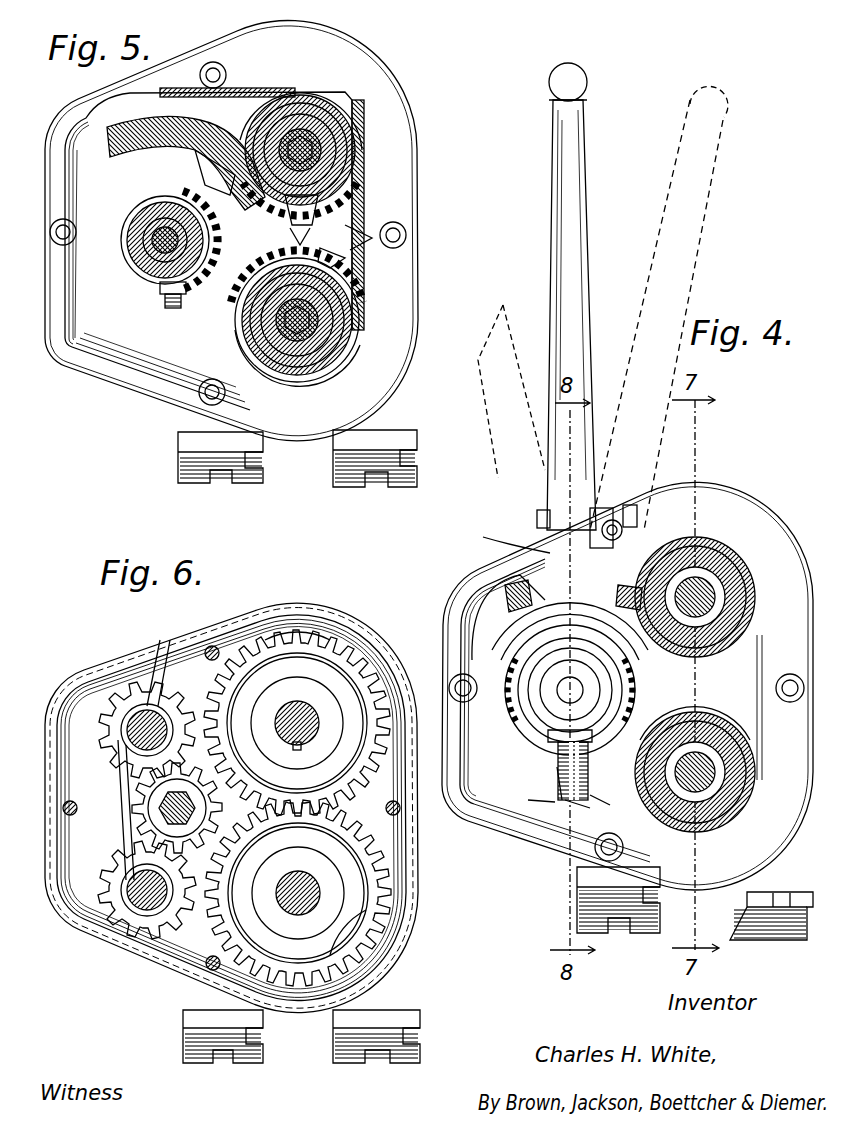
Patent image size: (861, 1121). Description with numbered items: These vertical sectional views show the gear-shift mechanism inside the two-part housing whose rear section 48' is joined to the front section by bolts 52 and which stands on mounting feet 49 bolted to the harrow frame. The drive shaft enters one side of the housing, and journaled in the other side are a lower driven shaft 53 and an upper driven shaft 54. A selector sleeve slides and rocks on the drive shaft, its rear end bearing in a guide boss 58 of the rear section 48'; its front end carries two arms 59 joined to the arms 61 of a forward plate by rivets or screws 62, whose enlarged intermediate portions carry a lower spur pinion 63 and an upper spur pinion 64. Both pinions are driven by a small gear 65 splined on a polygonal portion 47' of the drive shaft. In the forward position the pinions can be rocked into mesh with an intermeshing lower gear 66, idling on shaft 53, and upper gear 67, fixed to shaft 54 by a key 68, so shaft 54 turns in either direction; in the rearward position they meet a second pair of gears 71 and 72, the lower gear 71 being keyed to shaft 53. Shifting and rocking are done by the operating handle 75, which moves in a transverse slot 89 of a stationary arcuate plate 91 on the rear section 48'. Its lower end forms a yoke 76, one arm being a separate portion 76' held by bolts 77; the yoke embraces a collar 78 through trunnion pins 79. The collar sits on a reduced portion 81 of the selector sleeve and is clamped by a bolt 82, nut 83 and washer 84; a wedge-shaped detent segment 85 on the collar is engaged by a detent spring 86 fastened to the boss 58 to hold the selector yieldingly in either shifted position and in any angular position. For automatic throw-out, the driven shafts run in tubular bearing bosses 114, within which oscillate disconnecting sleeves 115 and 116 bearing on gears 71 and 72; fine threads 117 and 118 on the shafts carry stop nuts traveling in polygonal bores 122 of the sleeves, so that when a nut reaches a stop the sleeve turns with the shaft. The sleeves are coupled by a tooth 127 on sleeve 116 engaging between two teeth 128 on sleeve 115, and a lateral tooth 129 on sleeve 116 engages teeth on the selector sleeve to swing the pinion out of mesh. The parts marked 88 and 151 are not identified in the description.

In FIG. 5, the polygonal portion of the drive shaft 47' is at (150, 240).
In FIG. 6, the polygonal portion of the drive shaft 47' is at (161, 808).
In FIG. 5, the rear housing section 48' is at (258, 230).
In FIG. 4, the rear housing section 48' is at (627, 669).
In FIG. 5, the mounting legs or feet 49 is at (335, 470).
In FIG. 4, the mounting legs or feet 49 is at (615, 935).
In FIG. 6, the mounting legs or feet 49 is at (335, 1065).
In FIG. 5, the bolts 52 is at (215, 70).
In FIG. 4, the bolts 52 is at (600, 850).
In FIG. 6, the bolts 52 is at (210, 650).
In FIG. 5, the lower driven shaft 53 is at (305, 312).
In FIG. 4, the lower driven shaft 53 is at (717, 767).
In FIG. 6, the lower driven shaft 53 is at (312, 893).
In FIG. 5, the upper driven shaft 54 is at (330, 155).
In FIG. 4, the upper driven shaft 54 is at (743, 562).
In FIG. 6, the upper driven shaft 54 is at (302, 718).
In FIG. 4, the guide boss 58 is at (588, 752).
In FIG. 5, the arms 59 is at (182, 300).
In FIG. 6, the arms 61 is at (163, 687).
In FIG. 6, the rivets or screws 62 is at (133, 720).
In FIG. 6, the lower spur pinion 63 is at (122, 905).
In FIG. 6, the upper spur pinion 64 is at (163, 687).
In FIG. 6, the small gear 65 is at (140, 850).
In FIG. 6, the lower gear 66 is at (380, 930).
In FIG. 6, the upper gear 67 is at (293, 640).
In FIG. 6, the key 68 is at (300, 748).
In FIG. 5, the lower gear 71 is at (346, 259).
In FIG. 5, the upper gear 72 is at (325, 198).
In FIG. 4, the operating handle 75 is at (655, 250).
In FIG. 4, the fork or yoke 76 is at (560, 619).
In FIG. 4, the yoke arm portion 76' is at (547, 559).
In FIG. 4, the bolts 77 is at (556, 490).
In FIG. 4, the collar 78 is at (562, 712).
In FIG. 4, the trunnion pins 79 is at (505, 675).
In FIG. 4, the reduced portion 81 is at (556, 742).
In FIG. 4, the bolt 82 is at (563, 702).
In FIG. 4, the nut 83 is at (557, 767).
In FIG. 4, the washer 84 is at (557, 697).
In FIG. 4, the detent segment 85 is at (565, 800).
In FIG. 4, the detent spring 86 is at (535, 803).
In FIG. 4, the bracket 88 is at (590, 795).
In FIG. 4, the transverse slot 89 is at (630, 518).
In FIG. 4, the arcuate plate 91 is at (620, 533).
In FIG. 4, the tubular bearing bosses 114 is at (730, 700).
In FIG. 5, the disconnecting sleeve 115 is at (350, 368).
In FIG. 5, the disconnecting sleeve 116 is at (352, 98).
In FIG. 5, the fine thread 117 is at (393, 280).
In FIG. 4, the fine thread 117 is at (730, 747).
In FIG. 5, the fine thread 118 is at (318, 140).
In FIG. 4, the fine thread 118 is at (713, 597).
In FIG. 5, the polygonal bores 122 is at (343, 100).
In FIG. 4, the polygonal bores 122 is at (713, 570).
In FIG. 5, the tooth 127 is at (297, 228).
In FIG. 5, the teeth 128 is at (373, 238).
In FIG. 5, the tooth 129 is at (243, 165).
In FIG. 5, the lever pivot 151 is at (216, 180).